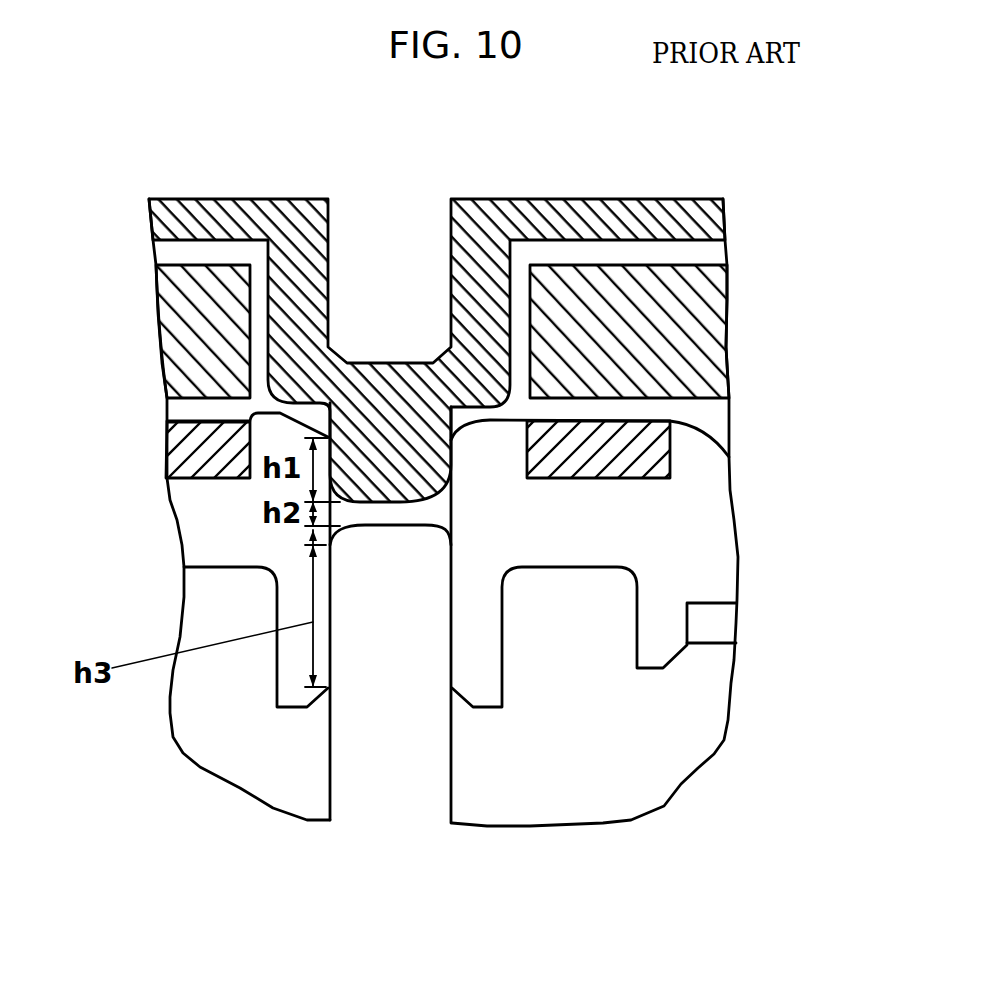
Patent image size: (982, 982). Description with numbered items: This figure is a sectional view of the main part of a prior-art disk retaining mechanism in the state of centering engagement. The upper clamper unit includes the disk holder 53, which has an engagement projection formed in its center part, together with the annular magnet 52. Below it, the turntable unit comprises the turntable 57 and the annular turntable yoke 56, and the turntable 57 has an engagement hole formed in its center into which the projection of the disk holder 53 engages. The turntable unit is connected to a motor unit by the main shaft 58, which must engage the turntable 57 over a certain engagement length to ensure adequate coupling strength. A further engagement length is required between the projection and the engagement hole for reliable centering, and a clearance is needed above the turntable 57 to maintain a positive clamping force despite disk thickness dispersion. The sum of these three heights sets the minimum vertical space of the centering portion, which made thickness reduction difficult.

The magnet 52 is at (657, 347).
The disk holder 53 is at (600, 210).
The turntable yoke 56 is at (637, 447).
The turntable 57 is at (697, 562).
The main shaft 58 is at (390, 798).